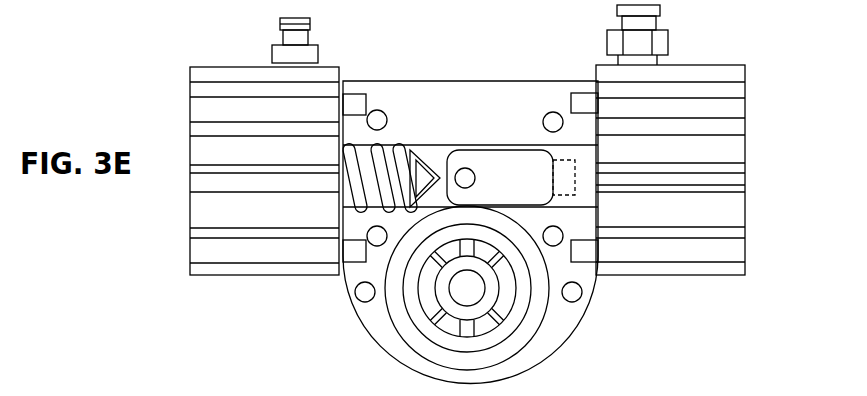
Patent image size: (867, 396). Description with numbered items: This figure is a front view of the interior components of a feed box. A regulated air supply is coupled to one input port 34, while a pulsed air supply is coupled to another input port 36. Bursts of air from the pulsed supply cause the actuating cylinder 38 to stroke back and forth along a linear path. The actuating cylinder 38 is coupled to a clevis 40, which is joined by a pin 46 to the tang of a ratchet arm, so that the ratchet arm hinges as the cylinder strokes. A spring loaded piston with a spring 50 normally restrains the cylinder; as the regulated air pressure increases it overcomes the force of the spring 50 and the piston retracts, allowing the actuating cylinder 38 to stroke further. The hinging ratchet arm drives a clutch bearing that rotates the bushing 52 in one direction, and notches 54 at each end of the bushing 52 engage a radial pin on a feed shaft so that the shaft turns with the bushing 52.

The input port 34 is at (303, 43).
The input port 36 is at (640, 43).
The actuating cylinder 38 is at (665, 175).
The clevis 40 is at (498, 177).
The pin 46 is at (425, 177).
The spring 50 is at (383, 157).
The bushing 52 is at (450, 317).
The notches 54 is at (507, 308).